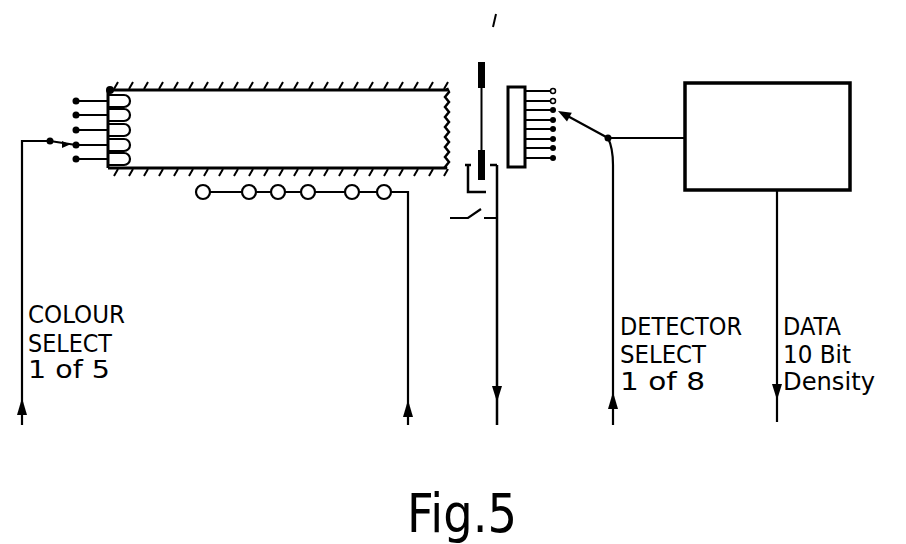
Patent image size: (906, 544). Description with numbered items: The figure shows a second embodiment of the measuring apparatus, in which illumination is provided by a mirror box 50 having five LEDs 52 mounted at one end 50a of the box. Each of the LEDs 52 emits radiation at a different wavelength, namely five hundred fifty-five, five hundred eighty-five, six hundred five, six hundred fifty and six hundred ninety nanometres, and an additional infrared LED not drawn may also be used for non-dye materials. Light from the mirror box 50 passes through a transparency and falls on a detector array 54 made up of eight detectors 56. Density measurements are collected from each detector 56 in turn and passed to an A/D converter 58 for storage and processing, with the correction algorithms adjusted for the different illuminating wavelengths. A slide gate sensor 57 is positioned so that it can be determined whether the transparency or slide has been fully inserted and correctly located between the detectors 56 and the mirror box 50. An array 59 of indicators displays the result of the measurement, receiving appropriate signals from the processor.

The mirror box 50 is at (256, 142).
The end of the box 50a is at (117, 186).
The LEDs 52 is at (110, 88).
The detector array 54 is at (542, 74).
The detectors 56 is at (553, 162).
The slide gate sensor 57 is at (507, 195).
The A/D converter 58 is at (785, 150).
The array of indicators 59 is at (399, 197).